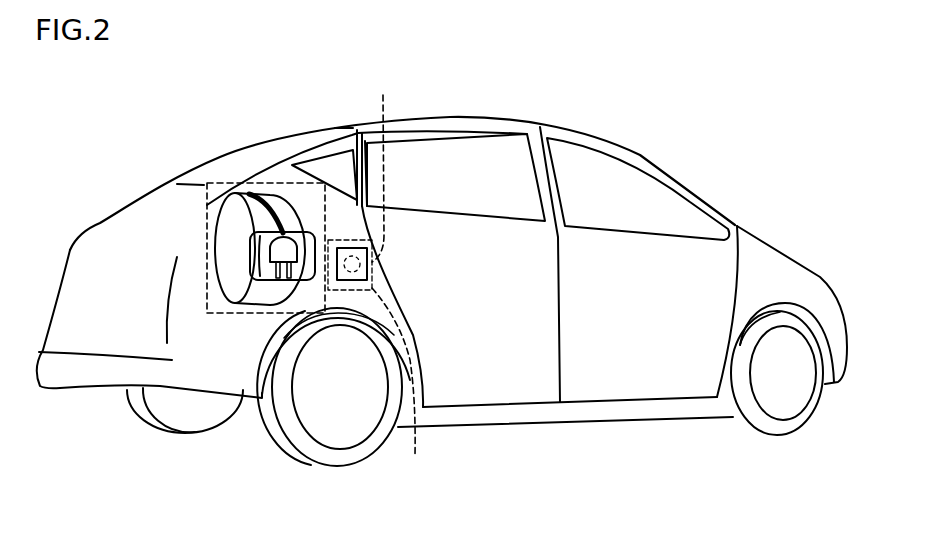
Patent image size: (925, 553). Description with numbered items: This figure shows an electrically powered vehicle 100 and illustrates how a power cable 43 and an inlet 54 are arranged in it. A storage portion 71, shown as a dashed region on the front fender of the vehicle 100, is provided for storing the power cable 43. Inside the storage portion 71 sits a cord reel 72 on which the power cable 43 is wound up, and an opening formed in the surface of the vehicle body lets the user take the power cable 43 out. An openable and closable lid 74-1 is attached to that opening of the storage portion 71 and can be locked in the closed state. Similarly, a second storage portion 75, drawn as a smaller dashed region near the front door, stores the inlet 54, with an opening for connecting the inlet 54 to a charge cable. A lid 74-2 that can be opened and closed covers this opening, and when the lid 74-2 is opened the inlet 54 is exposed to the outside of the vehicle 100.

The vehicle 100 is at (720, 118).
The storage portion 71 is at (207, 230).
The power cable 43 is at (278, 193).
The cord reel 72 is at (233, 282).
The lid 74-1 is at (265, 278).
The lid 74-2 is at (350, 246).
The storage portion 75 is at (384, 167).
The inlet 54 is at (399, 388).